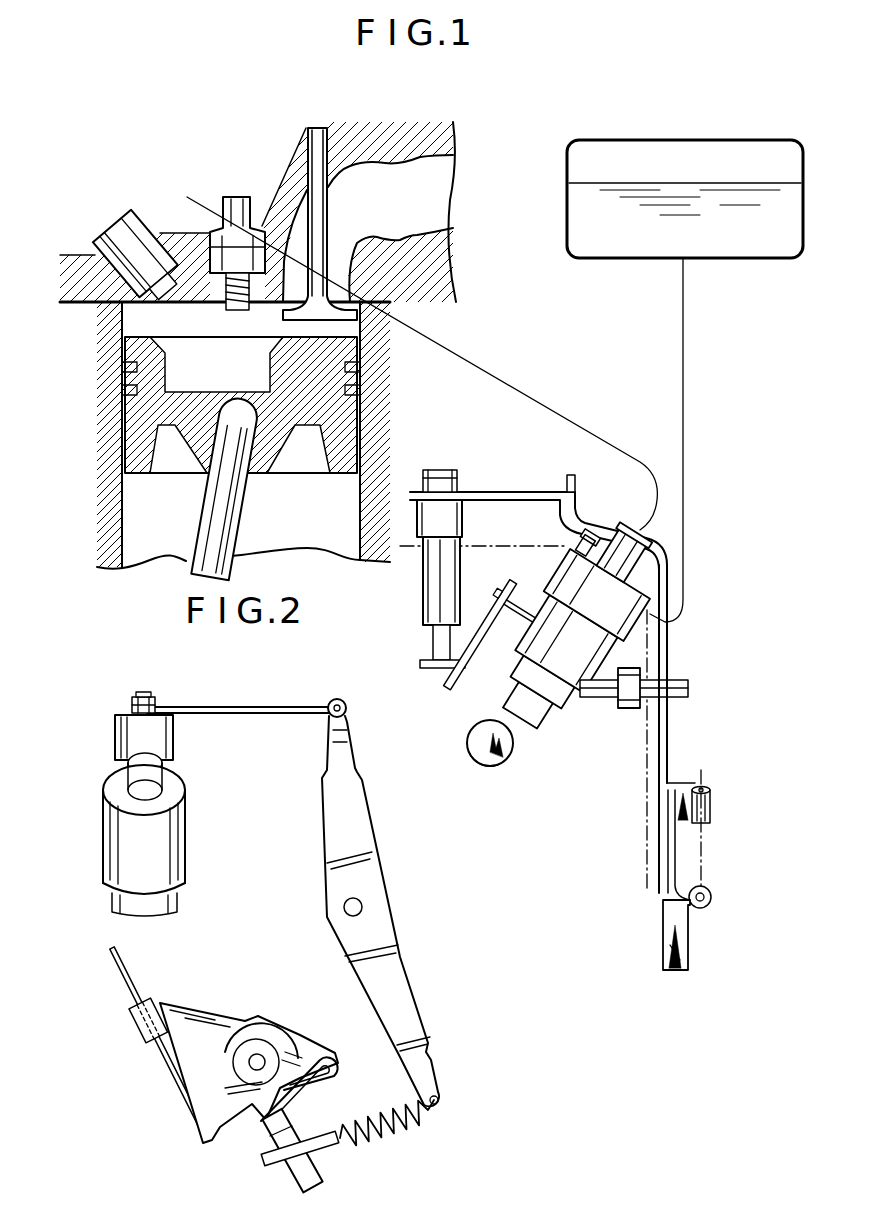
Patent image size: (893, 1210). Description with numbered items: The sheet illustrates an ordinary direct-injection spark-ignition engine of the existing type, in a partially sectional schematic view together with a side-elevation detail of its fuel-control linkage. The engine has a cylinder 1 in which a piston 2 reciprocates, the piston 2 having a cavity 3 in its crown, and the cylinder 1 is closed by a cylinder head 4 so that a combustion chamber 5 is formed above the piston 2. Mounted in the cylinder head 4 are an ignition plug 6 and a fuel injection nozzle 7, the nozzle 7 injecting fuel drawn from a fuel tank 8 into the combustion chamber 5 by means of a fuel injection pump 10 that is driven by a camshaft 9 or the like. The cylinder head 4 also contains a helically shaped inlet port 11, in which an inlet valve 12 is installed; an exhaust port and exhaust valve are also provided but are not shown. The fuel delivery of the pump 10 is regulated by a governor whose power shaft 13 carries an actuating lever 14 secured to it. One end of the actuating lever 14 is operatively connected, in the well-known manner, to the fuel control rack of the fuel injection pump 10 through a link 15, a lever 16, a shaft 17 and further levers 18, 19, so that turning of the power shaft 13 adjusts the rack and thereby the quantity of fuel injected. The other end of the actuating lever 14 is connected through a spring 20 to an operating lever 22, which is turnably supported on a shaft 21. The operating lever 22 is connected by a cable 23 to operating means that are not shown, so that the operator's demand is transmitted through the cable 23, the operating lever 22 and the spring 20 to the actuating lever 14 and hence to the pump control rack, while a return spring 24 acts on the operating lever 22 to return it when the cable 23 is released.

In FIG. 1, the cylinder 1 is at (112, 460).
In FIG. 1, the piston 2 is at (140, 410).
In FIG. 1, the cavity 3 is at (173, 367).
In FIG. 1, the cylinder head 4 is at (183, 247).
In FIG. 1, the combustion chamber 5 is at (137, 316).
In FIG. 1, the ignition plug 6 is at (240, 198).
In FIG. 1, the fuel injection nozzle 7 is at (107, 237).
In FIG. 1, the fuel tank 8 is at (617, 158).
In FIG. 1, the camshaft 9 is at (497, 765).
In FIG. 1, the fuel injection pump 10 is at (555, 705).
In FIG. 2, the fuel injection pump 10 is at (175, 846).
In FIG. 1, the helically shaped inlet port 11 is at (383, 177).
In FIG. 1, the inlet valve 12 is at (314, 128).
In FIG. 1, the power shaft 13 is at (690, 688).
In FIG. 2, the power shaft 13 is at (362, 907).
In FIG. 1, the actuating lever 14 is at (668, 638).
In FIG. 2, the actuating lever 14 is at (367, 832).
In FIG. 1, the link 15 is at (570, 505).
In FIG. 2, the link 15 is at (278, 707).
In FIG. 1, the lever 16 is at (490, 492).
In FIG. 2, the lever 16 is at (121, 713).
In FIG. 1, the shaft 17 is at (420, 662).
In FIG. 2, the shaft 17 is at (143, 697).
In FIG. 1, the lever 18 is at (472, 660).
In FIG. 1, the lever 19 is at (507, 600).
In FIG. 2, the spring 20 is at (393, 1122).
In FIG. 2, the shaft 21 is at (257, 1054).
In FIG. 1, the operating lever 22 is at (697, 906).
In FIG. 2, the operating lever 22 is at (265, 1135).
In FIG. 1, the cable 23 is at (703, 843).
In FIG. 2, the cable 23 is at (188, 1093).
In FIG. 2, the return spring 24 is at (318, 1050).